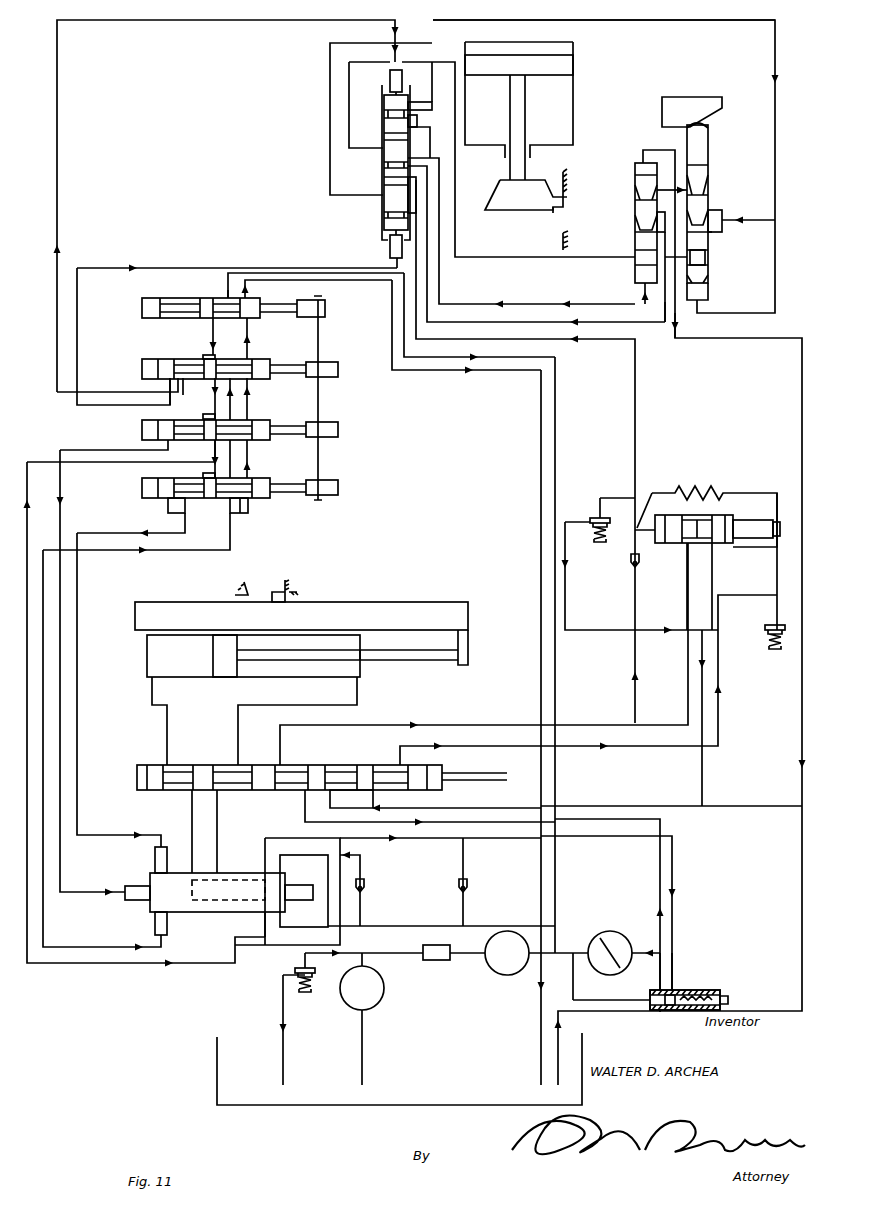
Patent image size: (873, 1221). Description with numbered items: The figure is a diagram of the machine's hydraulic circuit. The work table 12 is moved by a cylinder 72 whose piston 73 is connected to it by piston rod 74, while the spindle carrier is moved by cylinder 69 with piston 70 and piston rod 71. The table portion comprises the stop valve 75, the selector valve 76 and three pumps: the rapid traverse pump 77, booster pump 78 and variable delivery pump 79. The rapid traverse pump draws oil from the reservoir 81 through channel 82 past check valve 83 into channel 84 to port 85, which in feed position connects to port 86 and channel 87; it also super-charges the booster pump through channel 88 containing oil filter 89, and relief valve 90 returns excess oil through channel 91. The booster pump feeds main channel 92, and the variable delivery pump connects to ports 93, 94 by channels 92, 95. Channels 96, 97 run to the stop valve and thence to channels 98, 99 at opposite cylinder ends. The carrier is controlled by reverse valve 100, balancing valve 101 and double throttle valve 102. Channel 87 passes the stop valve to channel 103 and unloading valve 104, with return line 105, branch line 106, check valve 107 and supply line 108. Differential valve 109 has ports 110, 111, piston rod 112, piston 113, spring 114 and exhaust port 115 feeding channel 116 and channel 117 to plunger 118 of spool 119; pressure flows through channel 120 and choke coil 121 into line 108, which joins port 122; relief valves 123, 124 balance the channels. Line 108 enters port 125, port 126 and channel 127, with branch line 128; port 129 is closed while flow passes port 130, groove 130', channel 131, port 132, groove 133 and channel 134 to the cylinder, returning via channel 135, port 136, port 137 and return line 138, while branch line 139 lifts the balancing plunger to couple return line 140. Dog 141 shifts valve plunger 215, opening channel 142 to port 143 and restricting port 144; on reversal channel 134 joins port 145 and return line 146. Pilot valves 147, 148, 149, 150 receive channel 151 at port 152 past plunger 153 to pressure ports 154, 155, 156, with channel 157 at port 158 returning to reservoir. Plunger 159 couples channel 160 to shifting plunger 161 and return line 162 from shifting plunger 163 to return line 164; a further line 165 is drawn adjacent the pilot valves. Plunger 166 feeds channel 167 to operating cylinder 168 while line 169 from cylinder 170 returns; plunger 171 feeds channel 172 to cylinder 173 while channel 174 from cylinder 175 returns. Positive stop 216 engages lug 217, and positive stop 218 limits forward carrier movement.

The work table 12 is at (418, 600).
The cylinder 69 is at (575, 102).
The piston 70 is at (575, 68).
The piston rod 71 is at (525, 170).
The cylinder 72 is at (355, 678).
The piston 73 is at (230, 677).
The piston rod 74 is at (438, 660).
The stop valve 75 is at (200, 765).
The selector valve 76 is at (188, 913).
The rapid traverse pump 77 is at (378, 1003).
The booster pump 78 is at (505, 970).
The variable delivery pump 79 is at (622, 932).
The reservoir 81 is at (335, 1106).
The channel 82 is at (364, 1045).
The check valve 83 is at (366, 892).
The channel 84 is at (363, 870).
The port 85 is at (285, 870).
The port 86 is at (263, 915).
The channel 87 is at (305, 820).
The channel 88 is at (455, 958).
The oil filter 89 is at (440, 962).
The relief valve 90 is at (318, 985).
The channel 91 is at (285, 1058).
The main channel 92 is at (520, 925).
The port 93 is at (285, 912).
The port 94 is at (262, 870).
The return channel 95 is at (675, 866).
The channel 96 is at (190, 812).
The channel 97 is at (217, 822).
The channel 98 is at (155, 690).
The channel 99 is at (296, 704).
The reverse valve 100 is at (392, 215).
The balancing valve 101 is at (635, 203).
The double throttle valve 102 is at (708, 173).
The channel 103 is at (484, 725).
The unloading valve 104 is at (727, 545).
The return line 105 is at (718, 595).
The branch line 106 is at (633, 608).
The check valve 107 is at (631, 572).
The supply line 108 is at (424, 147).
The differential valve 109 is at (712, 990).
The port 110 is at (650, 997).
The port 111 is at (680, 993).
The piston rod 112 is at (670, 1011).
The piston 113 is at (675, 1012).
The spring 114 is at (716, 996).
The exhaust port 115 is at (660, 990).
The channel 116 is at (658, 872).
The channel 117 is at (652, 746).
The plunger 118 is at (748, 522).
The valve spool 119 is at (698, 522).
The channel 120 is at (762, 492).
The choke coil 121 is at (695, 490).
The port 122 is at (655, 540).
The relief valve 123 is at (765, 626).
The relief valve 124 is at (598, 512).
The port 125 is at (417, 122).
The port 126 is at (412, 100).
The channel 127 is at (668, 22).
The branch line 128 is at (775, 258).
The port 129 is at (710, 207).
The port 130 is at (727, 243).
The groove 130' is at (723, 266).
The channel 131 is at (660, 302).
The port 132 is at (418, 210).
The groove 133 is at (392, 203).
The channel 134 is at (330, 165).
The channel 135 is at (457, 92).
The port 136 is at (383, 145).
The port 137 is at (440, 160).
The return line 138 is at (493, 257).
The branch line 139 is at (640, 291).
The return line 140 is at (682, 318).
The dog 141 is at (690, 100).
The channel 142 is at (648, 150).
The port 143 is at (657, 195).
The port 144 is at (640, 245).
The port 145 is at (428, 176).
The return line 146 is at (562, 340).
The by-pass valve 147 is at (142, 320).
The carrier reverse pilot valve 148 is at (160, 358).
The table pilot valve 149 is at (148, 438).
The pilot valve 150 is at (142, 498).
The channel 151 is at (557, 420).
The port 152 is at (228, 296).
The plunger 153 is at (297, 303).
The pressure port 154 is at (236, 334).
The pressure port 155 is at (218, 414).
The pressure port 156 is at (213, 480).
The channel 157 is at (255, 273).
The port 158 is at (248, 296).
The valve plunger 159 is at (300, 368).
The channel 160 is at (112, 392).
The shifting plunger 161 is at (390, 78).
The return line 162 is at (163, 268).
The shifting plunger 163 is at (390, 257).
The return line 164 is at (248, 345).
The line 165 is at (170, 404).
The plunger 166 is at (300, 425).
The channel 167 is at (75, 450).
The operating cylinder 168 is at (133, 886).
The line 169 is at (232, 452).
The cylinder 170 is at (306, 888).
The plunger 171 is at (300, 483).
The channel 172 is at (183, 527).
The operating cylinder 173 is at (155, 853).
The channel 174 is at (232, 550).
The operating cylinder 175 is at (168, 937).
The valve plunger 215 is at (708, 138).
The positive stop 216 is at (568, 185).
The lug 217 is at (565, 207).
The positive stop 218 is at (562, 240).